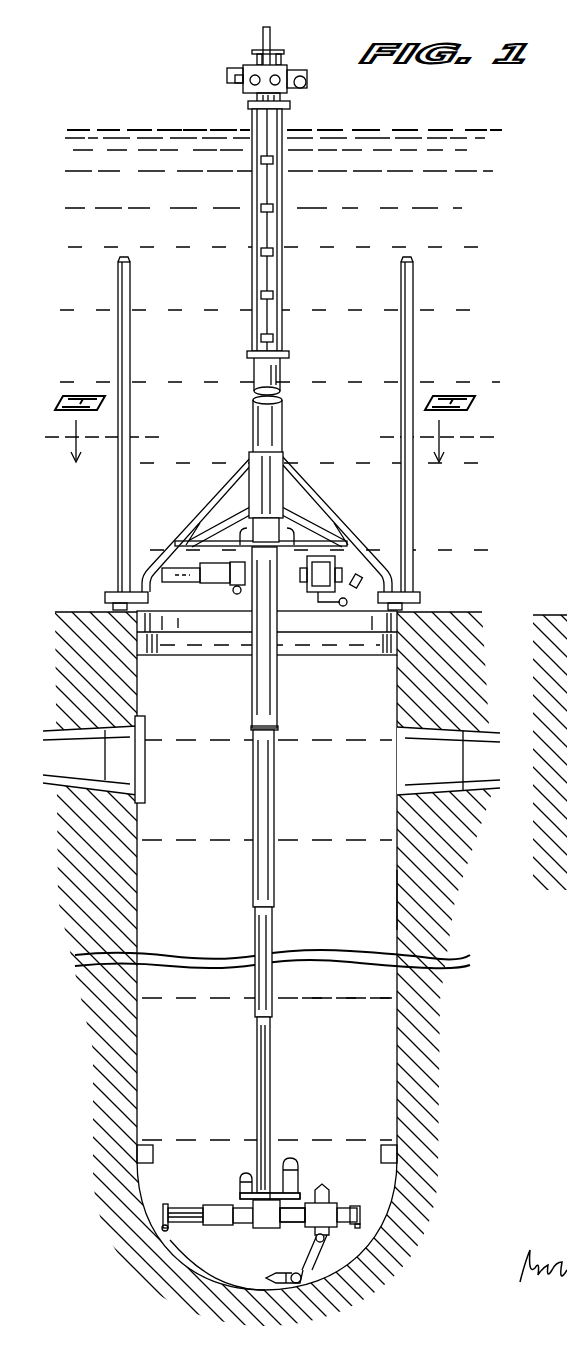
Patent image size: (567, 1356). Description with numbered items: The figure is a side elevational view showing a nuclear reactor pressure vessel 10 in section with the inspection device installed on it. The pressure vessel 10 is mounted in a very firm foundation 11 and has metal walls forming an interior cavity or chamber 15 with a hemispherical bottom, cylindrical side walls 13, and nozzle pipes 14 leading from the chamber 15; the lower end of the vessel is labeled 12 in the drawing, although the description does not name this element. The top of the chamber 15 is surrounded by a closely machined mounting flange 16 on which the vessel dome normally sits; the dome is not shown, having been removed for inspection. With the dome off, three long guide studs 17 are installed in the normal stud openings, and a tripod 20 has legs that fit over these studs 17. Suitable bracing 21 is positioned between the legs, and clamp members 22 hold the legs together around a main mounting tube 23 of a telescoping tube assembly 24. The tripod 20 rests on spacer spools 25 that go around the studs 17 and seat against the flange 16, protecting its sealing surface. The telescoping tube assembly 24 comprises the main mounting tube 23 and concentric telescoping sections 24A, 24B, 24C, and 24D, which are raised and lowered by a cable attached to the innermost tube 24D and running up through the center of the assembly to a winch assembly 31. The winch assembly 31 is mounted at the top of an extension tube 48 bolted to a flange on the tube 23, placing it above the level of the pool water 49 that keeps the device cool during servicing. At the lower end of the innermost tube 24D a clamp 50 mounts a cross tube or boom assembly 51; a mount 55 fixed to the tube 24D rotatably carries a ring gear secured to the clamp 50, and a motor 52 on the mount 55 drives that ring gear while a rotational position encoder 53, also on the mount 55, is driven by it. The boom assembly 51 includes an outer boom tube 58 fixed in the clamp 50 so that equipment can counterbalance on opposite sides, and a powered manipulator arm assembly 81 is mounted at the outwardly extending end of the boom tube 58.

The nuclear reactor pressure vessel 10 is at (378, 1090).
The foundation 11 is at (450, 613).
The lower end of pile 12 is at (382, 1222).
The cylindrical side walls 13 is at (400, 898).
The nozzle pipes 14 is at (88, 778).
The interior cavity or chamber 15 is at (400, 998).
The mounting flange 16 is at (167, 608).
The guide studs 17 is at (130, 318).
The tripod 20 is at (333, 533).
The bracing 21 is at (197, 537).
The clamp members 22 is at (275, 463).
The main mounting tube 23 is at (284, 422).
The telescoping tube assembly 24 is at (260, 870).
The telescoping section 24A is at (252, 712).
The telescoping section 24B is at (253, 870).
The telescoping section 24C is at (255, 935).
The innermost tube 24D is at (257, 1074).
The spacer spools 25 is at (105, 600).
The winch assembly 31 is at (310, 66).
The extension tube 48 is at (283, 272).
The pool water 49 is at (357, 158).
The clamp 50 is at (265, 1232).
The boom assembly 51 is at (236, 1192).
The motor 52 is at (300, 1172).
The rotational position encoder 53 is at (240, 1182).
The mount 55 is at (273, 1192).
The outer boom tube 58 is at (298, 1233).
The manipulator arm assembly 81 is at (334, 1252).